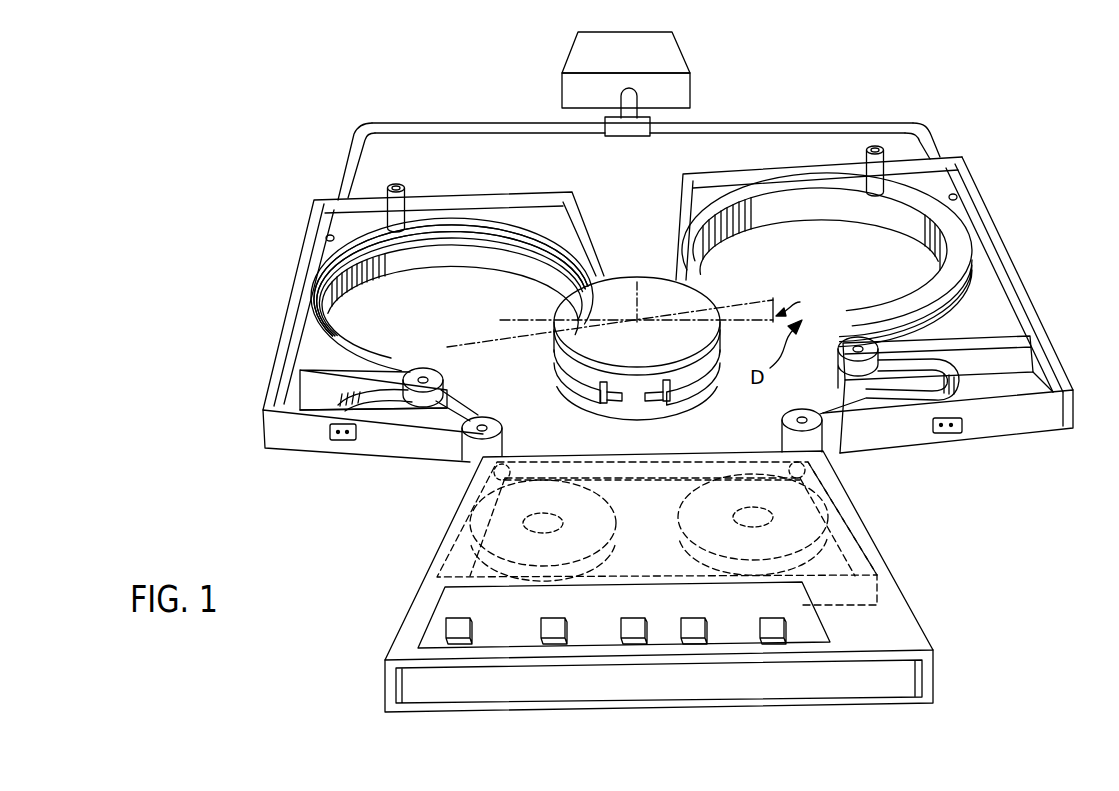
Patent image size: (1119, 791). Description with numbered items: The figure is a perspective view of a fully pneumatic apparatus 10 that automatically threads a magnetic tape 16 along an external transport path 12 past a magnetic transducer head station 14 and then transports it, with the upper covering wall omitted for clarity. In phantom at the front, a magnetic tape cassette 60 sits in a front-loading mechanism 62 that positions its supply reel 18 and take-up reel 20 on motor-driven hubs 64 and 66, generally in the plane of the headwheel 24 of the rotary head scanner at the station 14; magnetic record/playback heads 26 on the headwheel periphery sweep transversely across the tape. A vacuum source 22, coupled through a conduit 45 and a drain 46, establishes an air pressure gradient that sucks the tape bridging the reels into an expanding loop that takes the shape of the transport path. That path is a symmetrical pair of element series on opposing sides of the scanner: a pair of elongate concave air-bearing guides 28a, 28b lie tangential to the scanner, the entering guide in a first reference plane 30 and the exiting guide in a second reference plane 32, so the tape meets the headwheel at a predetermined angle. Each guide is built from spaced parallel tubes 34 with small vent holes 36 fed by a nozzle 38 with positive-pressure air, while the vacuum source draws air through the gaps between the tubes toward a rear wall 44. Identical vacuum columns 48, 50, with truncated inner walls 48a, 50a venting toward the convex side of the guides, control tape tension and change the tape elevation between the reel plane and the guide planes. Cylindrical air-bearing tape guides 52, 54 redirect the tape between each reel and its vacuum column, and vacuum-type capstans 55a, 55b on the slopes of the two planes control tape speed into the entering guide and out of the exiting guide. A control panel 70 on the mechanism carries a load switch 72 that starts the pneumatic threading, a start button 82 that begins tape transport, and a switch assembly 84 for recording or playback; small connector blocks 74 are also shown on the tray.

The apparatus 10 is at (1012, 172).
The transport path 12 is at (273, 298).
The magnetic transducer head station 14 is at (653, 280).
The magnetic tape 16 is at (882, 222).
The supply reel 18 is at (478, 518).
The take-up reel 20 is at (828, 520).
The vacuum source 22 is at (688, 92).
The headwheel 24 is at (660, 402).
The magnetic record/playback heads 26 is at (630, 402).
The concave air-bearing guide 28a is at (413, 263).
The concave air-bearing guide 28b is at (812, 226).
The first reference plane 30 is at (515, 328).
The second reference plane 32 is at (856, 302).
The tubes 34 is at (438, 246).
The vent holes 36 is at (496, 248).
The nozzle 38 is at (402, 188).
The rear wall 44 is at (524, 192).
The conduit 45 is at (453, 123).
The drain 46 is at (332, 236).
The vacuum column 48 is at (304, 401).
The truncated inner wall 48a is at (315, 372).
The vacuum column 50 is at (998, 384).
The truncated inner wall 50a is at (1015, 338).
The cylindrical tape guide 52 is at (473, 452).
The cylindrical tape guide 54 is at (822, 440).
The capstan 55a is at (434, 374).
The capstan 55b is at (850, 348).
The magnetic tape cassette 60 is at (868, 548).
The mechanism 62 is at (893, 577).
The motor-driven hub 64 is at (562, 523).
The motor-driven hub 66 is at (732, 517).
The control panel 70 is at (818, 634).
The load switch 72 is at (470, 636).
The connector block 74 is at (345, 442).
The start button 82 is at (565, 636).
The switch assembly 84 is at (766, 628).